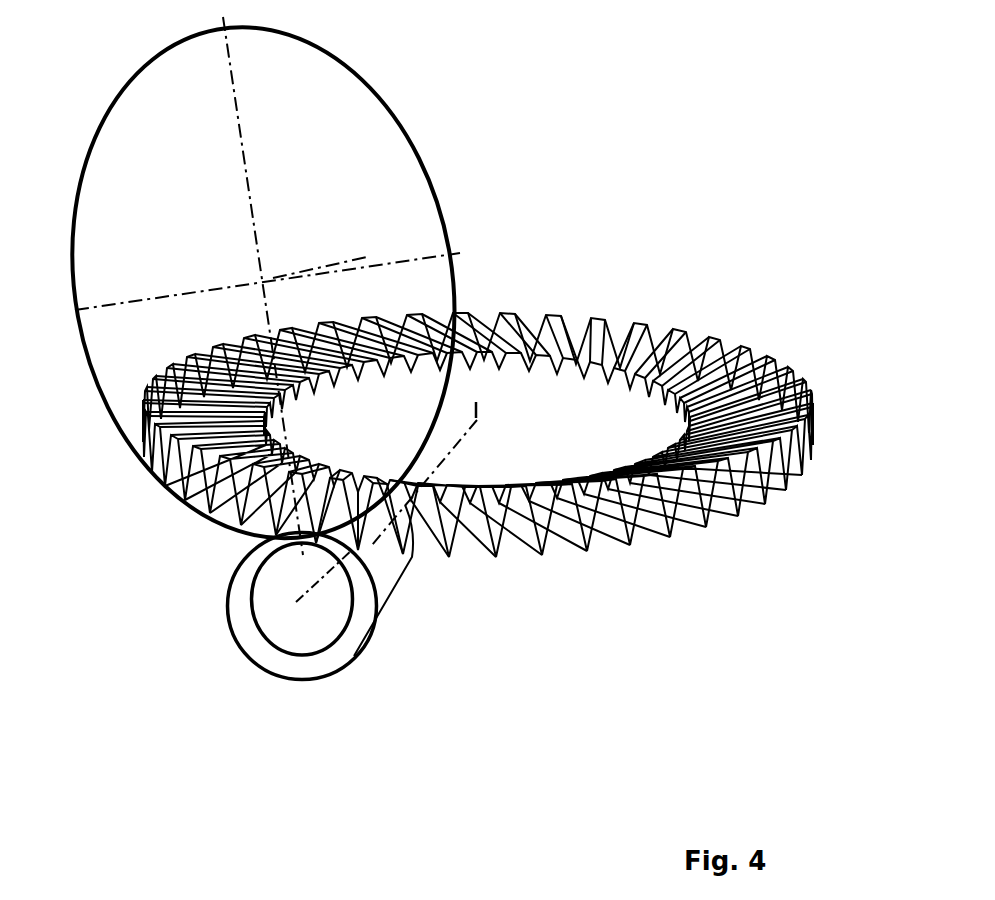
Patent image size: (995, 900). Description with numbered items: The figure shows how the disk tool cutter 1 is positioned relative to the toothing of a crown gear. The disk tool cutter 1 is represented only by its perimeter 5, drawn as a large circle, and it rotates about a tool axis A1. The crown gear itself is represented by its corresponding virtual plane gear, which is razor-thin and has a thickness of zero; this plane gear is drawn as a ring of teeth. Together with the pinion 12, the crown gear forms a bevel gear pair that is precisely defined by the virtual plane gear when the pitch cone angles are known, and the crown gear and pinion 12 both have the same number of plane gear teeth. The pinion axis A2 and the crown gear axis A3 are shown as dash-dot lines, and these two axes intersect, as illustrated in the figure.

The disk tool cutter 1 is at (115, 360).
The tool axis A1 is at (335, 263).
The pinion axis A2 is at (323, 578).
The crown gear axis A3 is at (475, 418).
The perimeter 5 is at (297, 537).
The pinion 12 is at (357, 627).